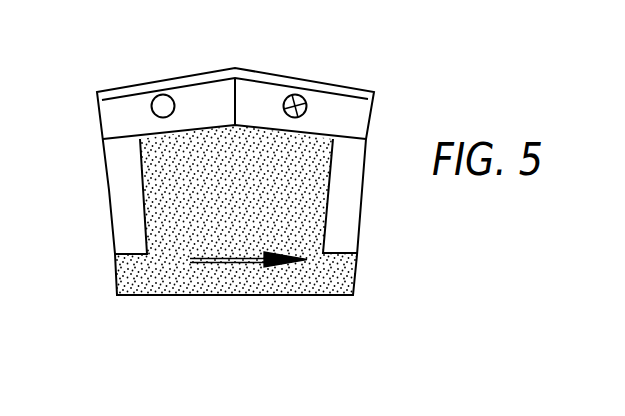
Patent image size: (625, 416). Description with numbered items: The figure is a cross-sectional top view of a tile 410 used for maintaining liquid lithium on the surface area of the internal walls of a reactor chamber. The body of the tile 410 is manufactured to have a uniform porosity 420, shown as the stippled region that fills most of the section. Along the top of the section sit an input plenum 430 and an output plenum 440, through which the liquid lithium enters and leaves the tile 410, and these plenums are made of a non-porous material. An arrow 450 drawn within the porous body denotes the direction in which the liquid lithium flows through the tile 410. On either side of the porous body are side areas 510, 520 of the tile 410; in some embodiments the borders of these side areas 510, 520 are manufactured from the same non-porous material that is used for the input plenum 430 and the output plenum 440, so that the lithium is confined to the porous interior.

The tile 410 is at (320, 322).
The uniform porosity 420 is at (188, 198).
The input plenum 430 is at (166, 95).
The output plenum 440 is at (301, 98).
The arrow 450 is at (208, 262).
The side area 510 is at (125, 210).
The side area 520 is at (350, 193).